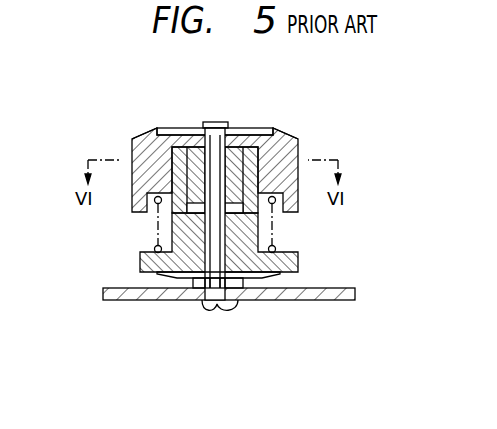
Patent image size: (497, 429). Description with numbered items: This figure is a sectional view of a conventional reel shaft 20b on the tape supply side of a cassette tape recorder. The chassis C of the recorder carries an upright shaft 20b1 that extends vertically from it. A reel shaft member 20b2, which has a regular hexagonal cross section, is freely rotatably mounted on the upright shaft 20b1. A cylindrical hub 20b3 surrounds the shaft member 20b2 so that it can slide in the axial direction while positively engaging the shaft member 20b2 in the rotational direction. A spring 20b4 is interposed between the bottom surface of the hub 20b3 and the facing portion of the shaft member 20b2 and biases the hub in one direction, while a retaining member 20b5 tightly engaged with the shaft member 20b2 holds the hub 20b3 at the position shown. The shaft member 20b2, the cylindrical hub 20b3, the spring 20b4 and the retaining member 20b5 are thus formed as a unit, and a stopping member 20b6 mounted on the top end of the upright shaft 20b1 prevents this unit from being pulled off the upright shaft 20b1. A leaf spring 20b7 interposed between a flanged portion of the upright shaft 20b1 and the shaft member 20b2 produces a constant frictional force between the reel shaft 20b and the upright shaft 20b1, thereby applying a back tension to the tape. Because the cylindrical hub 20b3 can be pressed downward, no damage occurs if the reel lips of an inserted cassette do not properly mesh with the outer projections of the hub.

The reel shaft 20b is at (86, 239).
The upright shaft 20b1 is at (217, 302).
The reel shaft member 20b2 is at (180, 228).
The cylindrical hub 20b3 is at (292, 148).
The spring 20b4 is at (278, 246).
The retaining member 20b5 is at (243, 128).
The stopping member 20b6 is at (203, 125).
The leaf spring 20b7 is at (173, 279).
The chassis C is at (312, 300).